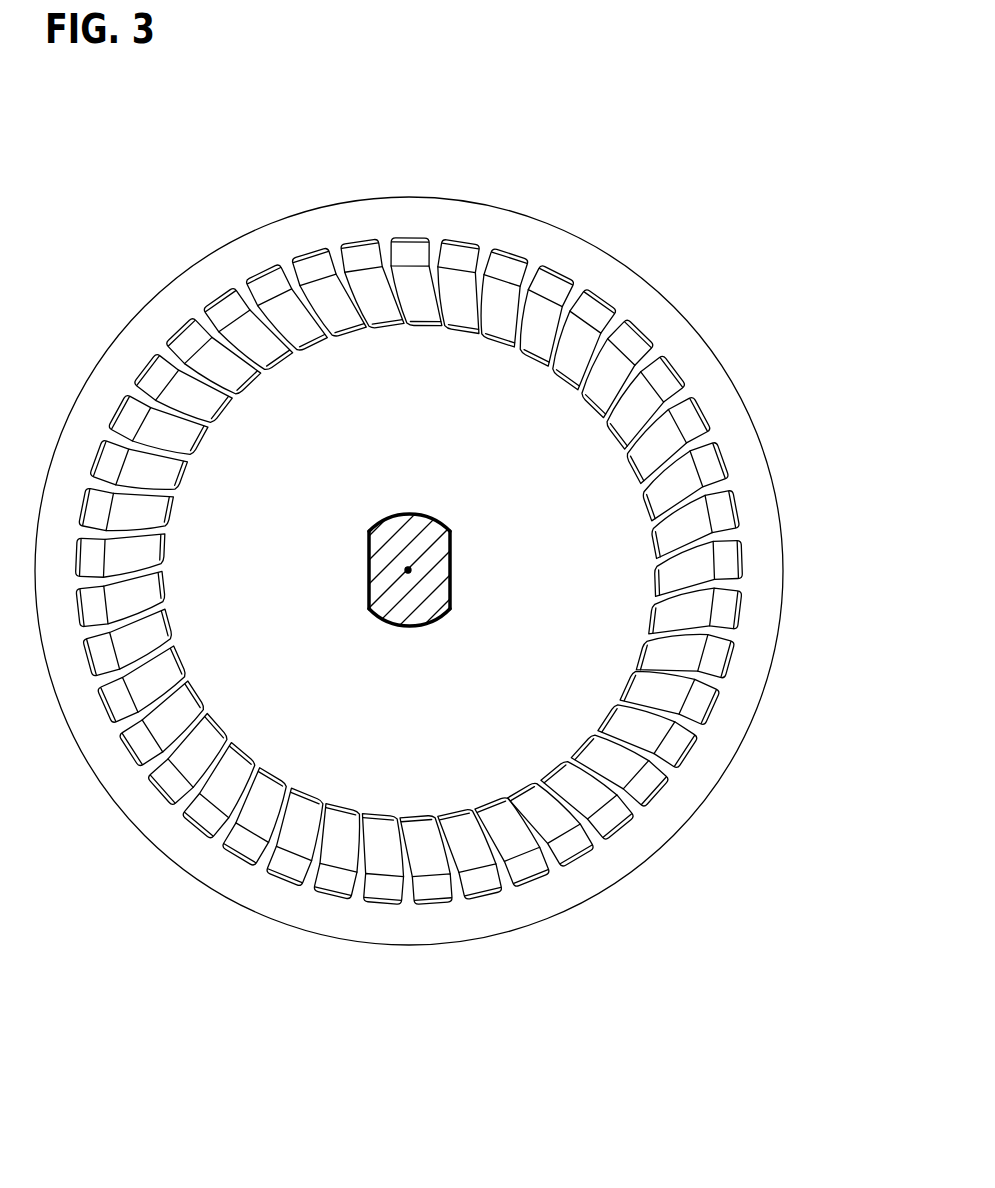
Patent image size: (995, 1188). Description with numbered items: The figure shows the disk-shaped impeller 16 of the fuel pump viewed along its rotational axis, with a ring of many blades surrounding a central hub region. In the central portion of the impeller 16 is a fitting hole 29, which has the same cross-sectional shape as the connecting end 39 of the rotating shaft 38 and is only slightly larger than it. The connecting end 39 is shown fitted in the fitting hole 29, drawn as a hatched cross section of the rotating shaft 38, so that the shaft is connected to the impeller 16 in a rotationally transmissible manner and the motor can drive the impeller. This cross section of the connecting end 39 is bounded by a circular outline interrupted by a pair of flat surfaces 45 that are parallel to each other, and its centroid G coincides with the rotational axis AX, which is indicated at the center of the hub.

The impeller 16 is at (400, 212).
The fitting hole 29 is at (370, 552).
The rotating shaft 38 is at (395, 528).
The connecting end 39 is at (430, 605).
The flat surfaces 45 is at (450, 585).
The centroid G is at (408, 570).
The rotational axis AX is at (408, 572).